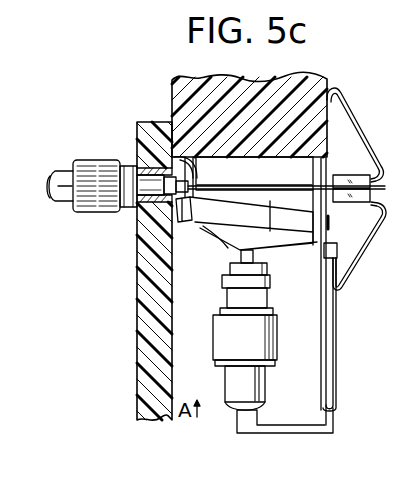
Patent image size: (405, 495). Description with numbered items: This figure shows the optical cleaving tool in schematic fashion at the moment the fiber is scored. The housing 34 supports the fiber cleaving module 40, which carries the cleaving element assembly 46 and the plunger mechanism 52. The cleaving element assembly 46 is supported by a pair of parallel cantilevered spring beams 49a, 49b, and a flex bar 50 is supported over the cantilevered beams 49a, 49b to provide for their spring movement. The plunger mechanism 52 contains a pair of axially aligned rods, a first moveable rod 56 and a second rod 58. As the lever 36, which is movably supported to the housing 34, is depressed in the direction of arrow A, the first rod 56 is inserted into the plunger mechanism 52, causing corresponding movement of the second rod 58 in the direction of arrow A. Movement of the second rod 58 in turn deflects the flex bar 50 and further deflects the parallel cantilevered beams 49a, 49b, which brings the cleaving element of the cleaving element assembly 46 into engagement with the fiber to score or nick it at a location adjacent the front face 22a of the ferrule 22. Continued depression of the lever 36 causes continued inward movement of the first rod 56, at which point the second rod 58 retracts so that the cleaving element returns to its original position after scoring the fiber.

The ferrule 22 is at (100, 198).
The front face 22a is at (192, 148).
The housing 34 is at (304, 82).
The lever 36 is at (277, 434).
The fiber cleaving module 40 is at (196, 212).
The cleaving element assembly 46 is at (318, 227).
The cantilevered spring beam 49a is at (292, 210).
The cantilevered spring beam 49b is at (256, 232).
The flex bar 50 is at (228, 250).
The plunger mechanism 52 is at (265, 338).
The first moveable rod 56 is at (233, 379).
The second rod 58 is at (240, 264).